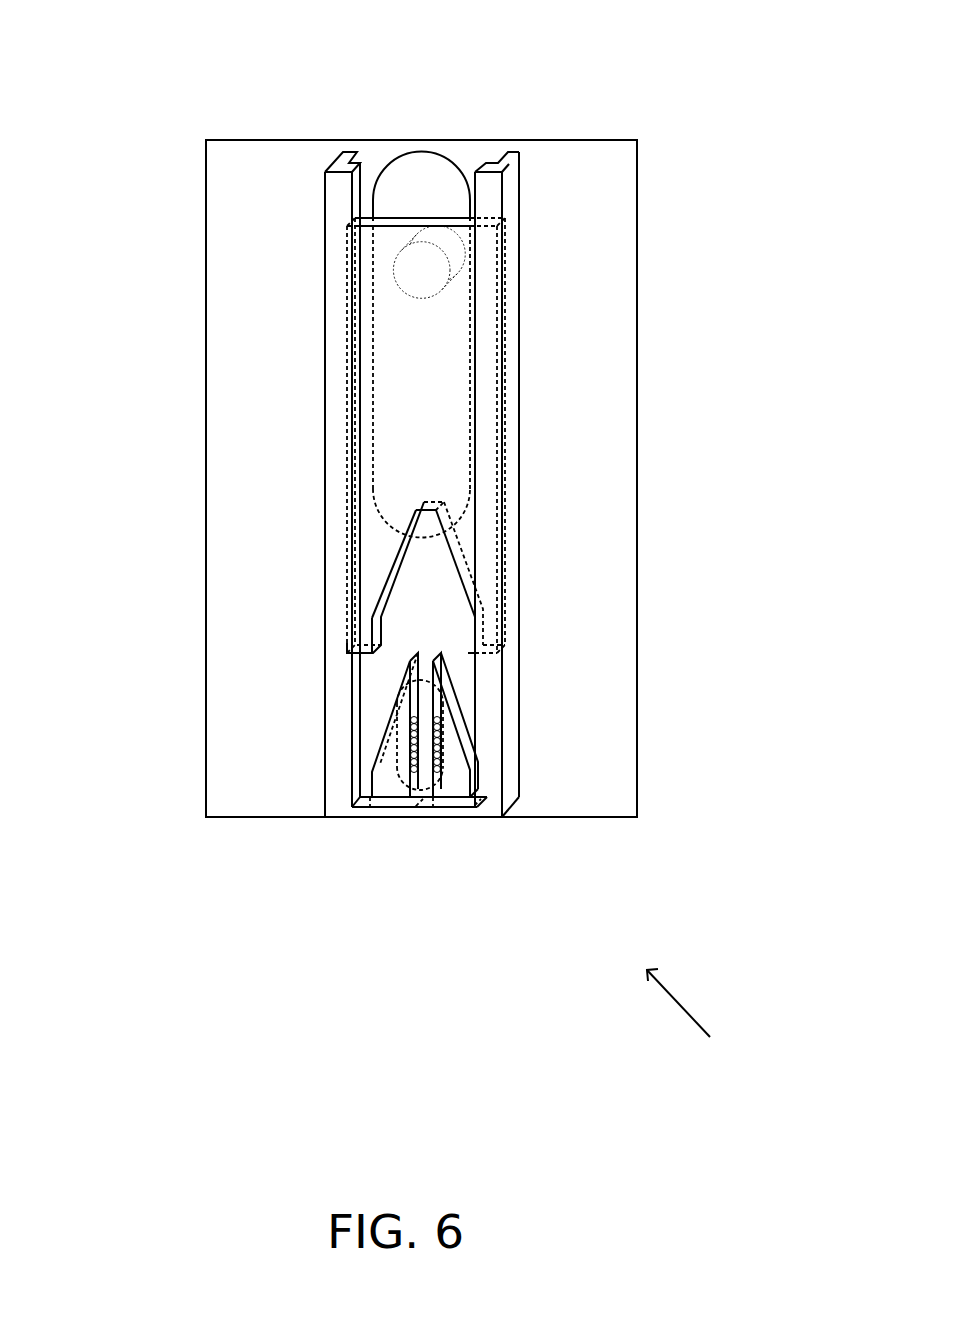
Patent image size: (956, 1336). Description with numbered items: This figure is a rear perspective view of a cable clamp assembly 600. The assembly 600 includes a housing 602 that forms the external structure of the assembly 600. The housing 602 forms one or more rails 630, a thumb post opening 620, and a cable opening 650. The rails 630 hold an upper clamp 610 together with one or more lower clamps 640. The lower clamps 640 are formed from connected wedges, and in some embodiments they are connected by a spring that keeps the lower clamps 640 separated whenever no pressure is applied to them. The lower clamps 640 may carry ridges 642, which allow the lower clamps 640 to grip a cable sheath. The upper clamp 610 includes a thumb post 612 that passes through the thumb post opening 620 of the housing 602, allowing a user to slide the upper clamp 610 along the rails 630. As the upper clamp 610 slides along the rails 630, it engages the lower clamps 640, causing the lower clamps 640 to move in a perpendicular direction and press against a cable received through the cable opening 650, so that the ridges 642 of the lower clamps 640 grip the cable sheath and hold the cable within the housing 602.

The cable clamp assembly 600 is at (696, 1019).
The housing 602 is at (622, 490).
The upper clamp 610 is at (433, 222).
The thumb post 612 is at (422, 264).
The thumb post opening 620 is at (393, 190).
The rails 630 is at (327, 592).
The lower clamps 640 is at (455, 785).
The ridges 642 is at (405, 749).
The cable opening 650 is at (425, 757).